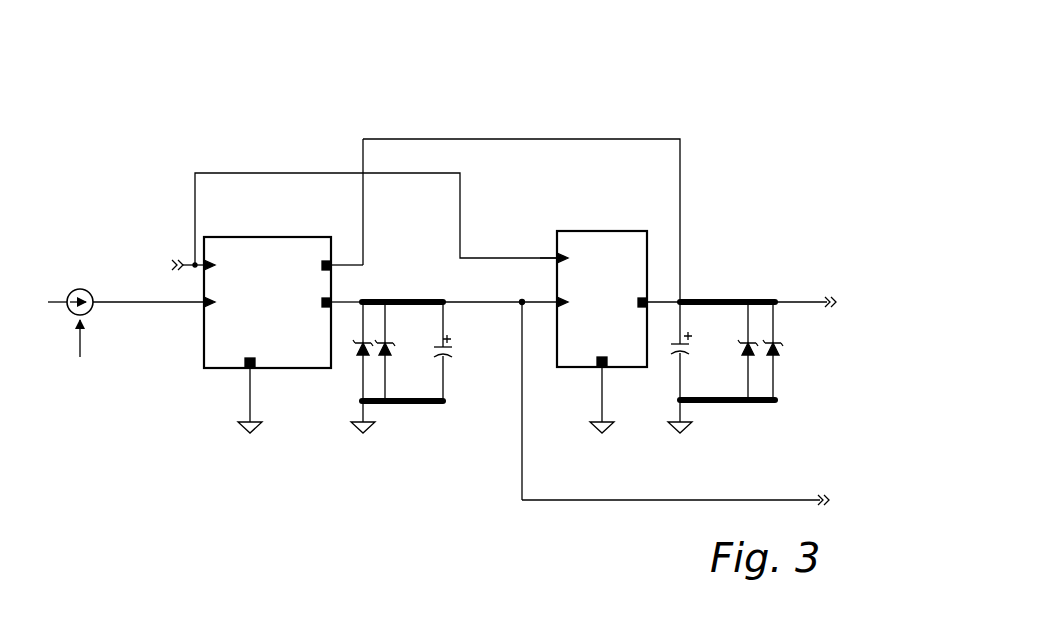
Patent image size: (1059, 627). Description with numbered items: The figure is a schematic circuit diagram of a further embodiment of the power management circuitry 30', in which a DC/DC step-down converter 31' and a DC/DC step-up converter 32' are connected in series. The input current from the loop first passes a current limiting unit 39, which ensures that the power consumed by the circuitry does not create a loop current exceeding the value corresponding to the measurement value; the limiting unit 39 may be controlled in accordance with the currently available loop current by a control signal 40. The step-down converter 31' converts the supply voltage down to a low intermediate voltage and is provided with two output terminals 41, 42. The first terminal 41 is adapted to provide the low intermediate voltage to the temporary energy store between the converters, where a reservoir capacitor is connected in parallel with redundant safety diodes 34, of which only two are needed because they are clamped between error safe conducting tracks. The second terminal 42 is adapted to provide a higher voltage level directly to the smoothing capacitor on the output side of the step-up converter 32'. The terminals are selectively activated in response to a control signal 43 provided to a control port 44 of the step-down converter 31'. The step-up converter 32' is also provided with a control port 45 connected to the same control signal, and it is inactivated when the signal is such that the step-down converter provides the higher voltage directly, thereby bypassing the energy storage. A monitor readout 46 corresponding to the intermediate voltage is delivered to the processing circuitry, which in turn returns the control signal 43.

The power management circuitry 30' is at (550, 154).
The step-down converter 31' is at (225, 324).
The step-up converter 32' is at (584, 354).
The safety diodes 34 is at (387, 352).
The current limiting unit 39 is at (67, 314).
The control signal 40 is at (83, 340).
The first output terminal 41 is at (338, 302).
The second output terminal 42 is at (338, 262).
The control signal 43 is at (188, 262).
The control port 44 is at (212, 262).
The control port 45 is at (557, 257).
The monitor readout 46 is at (695, 498).